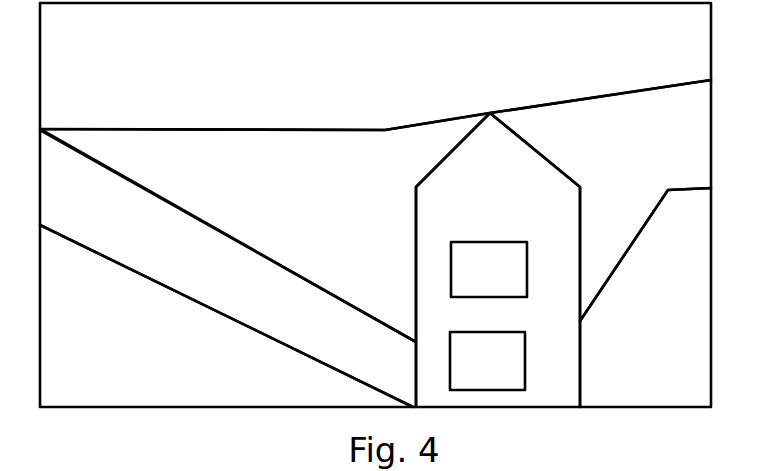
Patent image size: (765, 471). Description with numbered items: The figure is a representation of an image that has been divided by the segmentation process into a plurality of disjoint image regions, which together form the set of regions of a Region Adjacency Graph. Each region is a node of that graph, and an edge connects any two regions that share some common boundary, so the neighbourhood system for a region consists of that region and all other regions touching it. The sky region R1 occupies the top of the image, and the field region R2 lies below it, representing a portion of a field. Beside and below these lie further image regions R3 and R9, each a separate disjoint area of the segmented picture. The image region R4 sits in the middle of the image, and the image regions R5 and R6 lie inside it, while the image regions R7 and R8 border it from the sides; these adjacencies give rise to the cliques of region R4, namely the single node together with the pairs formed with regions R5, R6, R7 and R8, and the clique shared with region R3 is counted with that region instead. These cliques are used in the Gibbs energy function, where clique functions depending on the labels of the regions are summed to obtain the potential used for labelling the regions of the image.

The sky region R1 is at (375, 66).
The field region R2 is at (265, 227).
The image region R3 is at (600, 200).
The image region R4 is at (498, 260).
The image region R5 is at (489, 269).
The image region R6 is at (487, 361).
The image region R7 is at (645, 297).
The image region R8 is at (228, 268).
The image region R9 is at (226, 316).